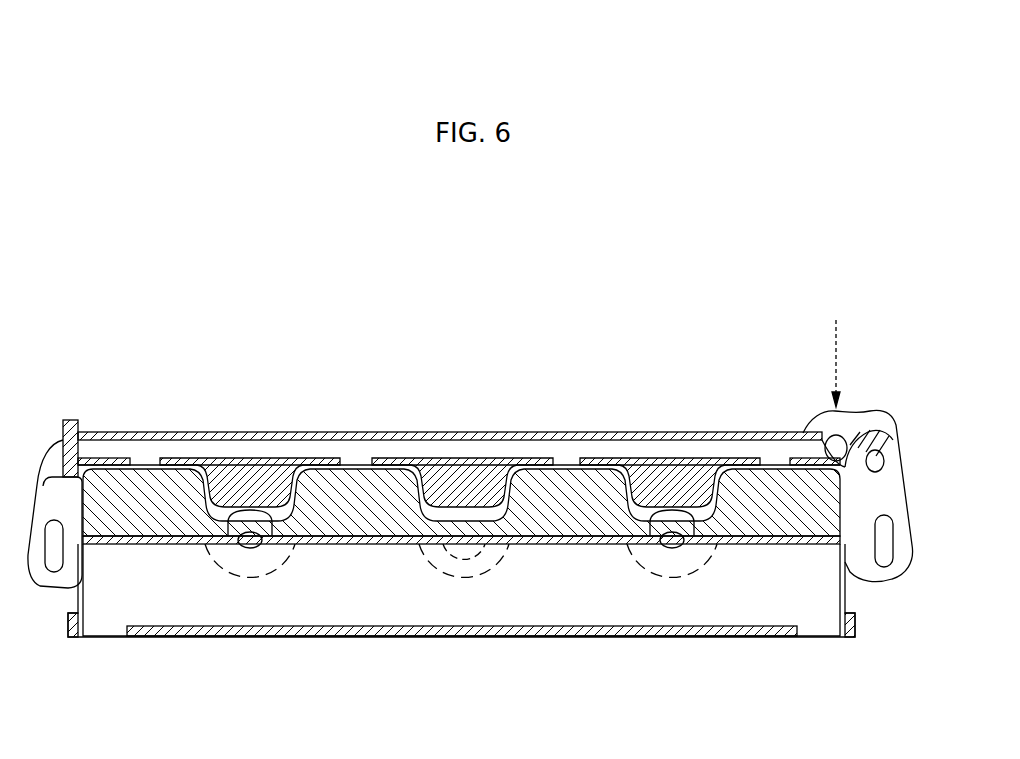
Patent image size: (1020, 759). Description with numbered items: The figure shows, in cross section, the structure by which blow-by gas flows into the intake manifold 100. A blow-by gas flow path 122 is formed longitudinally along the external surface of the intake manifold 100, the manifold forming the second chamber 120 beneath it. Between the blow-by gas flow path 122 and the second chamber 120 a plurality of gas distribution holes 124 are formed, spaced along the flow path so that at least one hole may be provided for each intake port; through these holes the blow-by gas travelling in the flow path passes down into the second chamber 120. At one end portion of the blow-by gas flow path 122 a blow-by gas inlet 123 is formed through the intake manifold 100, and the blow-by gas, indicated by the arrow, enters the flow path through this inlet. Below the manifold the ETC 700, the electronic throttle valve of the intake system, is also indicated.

The intake manifold 100 is at (232, 404).
The second chamber 120 is at (375, 496).
The blow-by gas flow path 122 is at (497, 443).
The blow-by gas inlet 123 is at (845, 436).
The gas distribution hole 124 is at (145, 455).
The ETC (electronic throttle valve) 700 is at (368, 595).